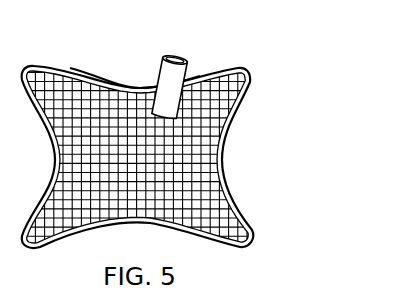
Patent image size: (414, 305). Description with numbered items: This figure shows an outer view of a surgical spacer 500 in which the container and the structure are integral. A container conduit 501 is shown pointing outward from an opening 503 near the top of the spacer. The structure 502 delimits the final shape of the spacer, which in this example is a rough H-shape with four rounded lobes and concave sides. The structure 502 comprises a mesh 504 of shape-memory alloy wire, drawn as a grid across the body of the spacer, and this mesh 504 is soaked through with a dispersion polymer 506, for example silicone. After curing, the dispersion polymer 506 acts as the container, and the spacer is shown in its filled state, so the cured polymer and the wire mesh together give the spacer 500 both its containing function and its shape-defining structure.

The surgical spacer 500 is at (194, 132).
The container conduit 501 is at (188, 77).
The structure 502 is at (247, 213).
The opening 503 is at (130, 104).
The mesh 504 is at (134, 93).
The dispersion polymer 506 is at (236, 121).